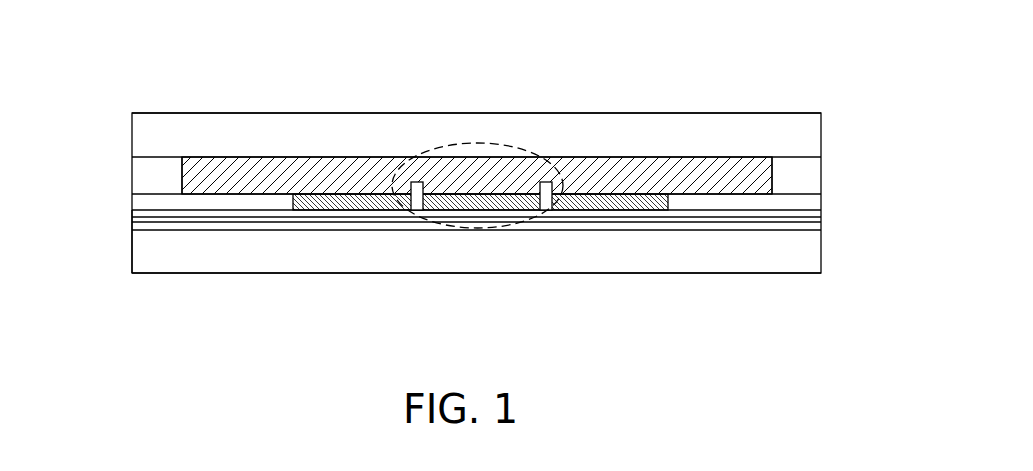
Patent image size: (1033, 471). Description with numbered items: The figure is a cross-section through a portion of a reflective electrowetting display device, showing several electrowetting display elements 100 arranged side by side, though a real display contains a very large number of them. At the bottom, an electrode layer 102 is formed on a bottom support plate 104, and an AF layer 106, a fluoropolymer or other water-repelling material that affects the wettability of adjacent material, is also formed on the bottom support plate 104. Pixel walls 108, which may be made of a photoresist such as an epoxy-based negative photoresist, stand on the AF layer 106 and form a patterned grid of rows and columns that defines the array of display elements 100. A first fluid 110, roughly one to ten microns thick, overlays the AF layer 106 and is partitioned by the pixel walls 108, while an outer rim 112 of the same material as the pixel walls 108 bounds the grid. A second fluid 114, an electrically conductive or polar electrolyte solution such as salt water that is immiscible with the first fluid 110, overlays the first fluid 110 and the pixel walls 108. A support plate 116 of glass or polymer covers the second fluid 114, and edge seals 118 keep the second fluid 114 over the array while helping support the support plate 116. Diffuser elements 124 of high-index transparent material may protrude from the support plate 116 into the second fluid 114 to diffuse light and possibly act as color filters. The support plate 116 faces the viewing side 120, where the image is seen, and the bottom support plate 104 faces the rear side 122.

The electrowetting display element 100 is at (523, 217).
The electrode layer 102 is at (132, 225).
The bottom support plate 104 is at (205, 258).
The AF layer 106 is at (132, 216).
The pixel walls 108 is at (417, 217).
The first fluid 110 is at (595, 210).
The outer rim 112 is at (131, 202).
The second fluid 114 is at (682, 156).
The support plate 116 is at (205, 142).
The edge seals 118 is at (174, 186).
The viewing side 120 is at (580, 32).
The rear side 122 is at (258, 308).
The diffuser elements 124 is at (752, 170).